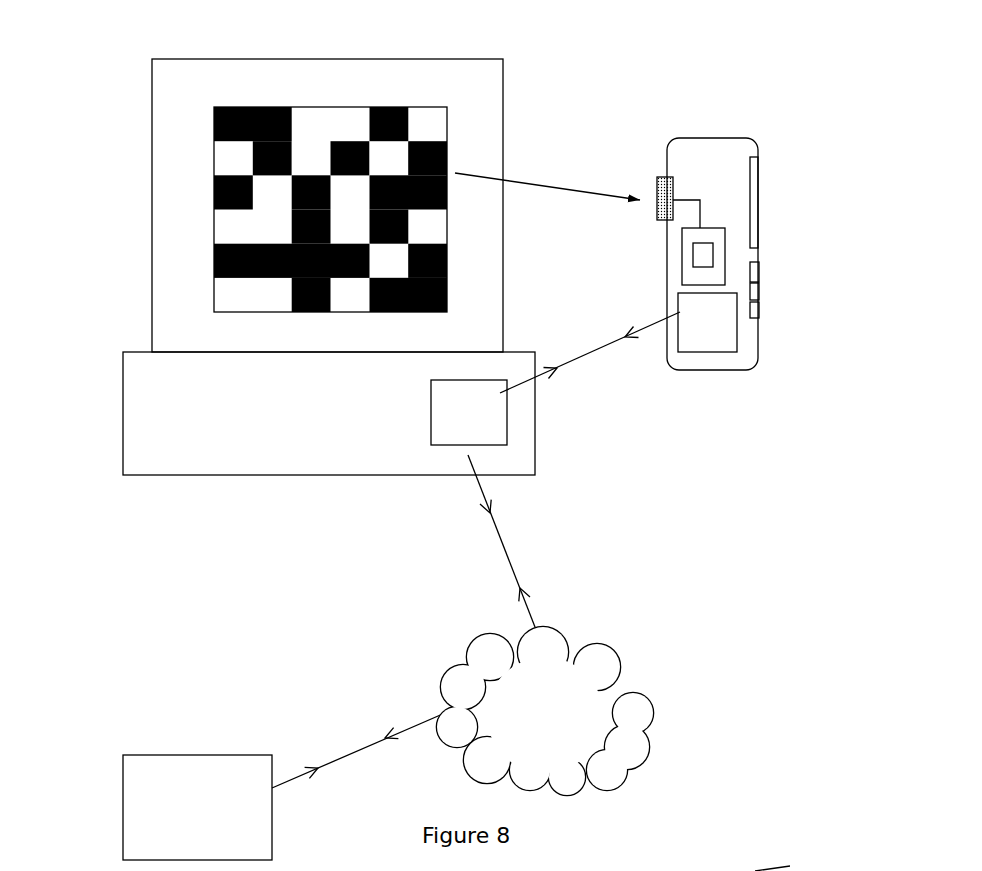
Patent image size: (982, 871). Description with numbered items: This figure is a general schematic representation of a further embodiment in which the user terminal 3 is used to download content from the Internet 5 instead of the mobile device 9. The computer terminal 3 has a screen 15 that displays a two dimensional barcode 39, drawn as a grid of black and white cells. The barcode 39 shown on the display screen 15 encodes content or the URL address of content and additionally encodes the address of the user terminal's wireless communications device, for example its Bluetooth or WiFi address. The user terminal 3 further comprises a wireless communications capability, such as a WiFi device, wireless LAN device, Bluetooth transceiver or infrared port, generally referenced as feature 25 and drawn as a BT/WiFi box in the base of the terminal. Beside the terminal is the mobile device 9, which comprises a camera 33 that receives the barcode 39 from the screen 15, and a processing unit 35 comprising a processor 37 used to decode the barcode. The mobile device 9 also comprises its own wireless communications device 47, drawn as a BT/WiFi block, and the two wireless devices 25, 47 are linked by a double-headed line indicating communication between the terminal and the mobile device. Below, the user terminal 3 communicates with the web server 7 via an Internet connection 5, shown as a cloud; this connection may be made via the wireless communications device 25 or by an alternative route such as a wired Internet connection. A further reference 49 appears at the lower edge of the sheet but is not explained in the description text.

The user terminal 3 is at (382, 273).
The screen 15 is at (268, 185).
The two dimensional barcode 39 is at (220, 310).
The wireless communications device 25 is at (485, 430).
The mobile device 9 is at (704, 250).
The camera 33 is at (662, 185).
The processing unit 35 is at (678, 262).
The processor 37 is at (715, 248).
The wireless communications device 47 is at (718, 345).
The Internet 5 is at (568, 687).
The web server 7 is at (167, 775).
The connection 49 is at (792, 861).